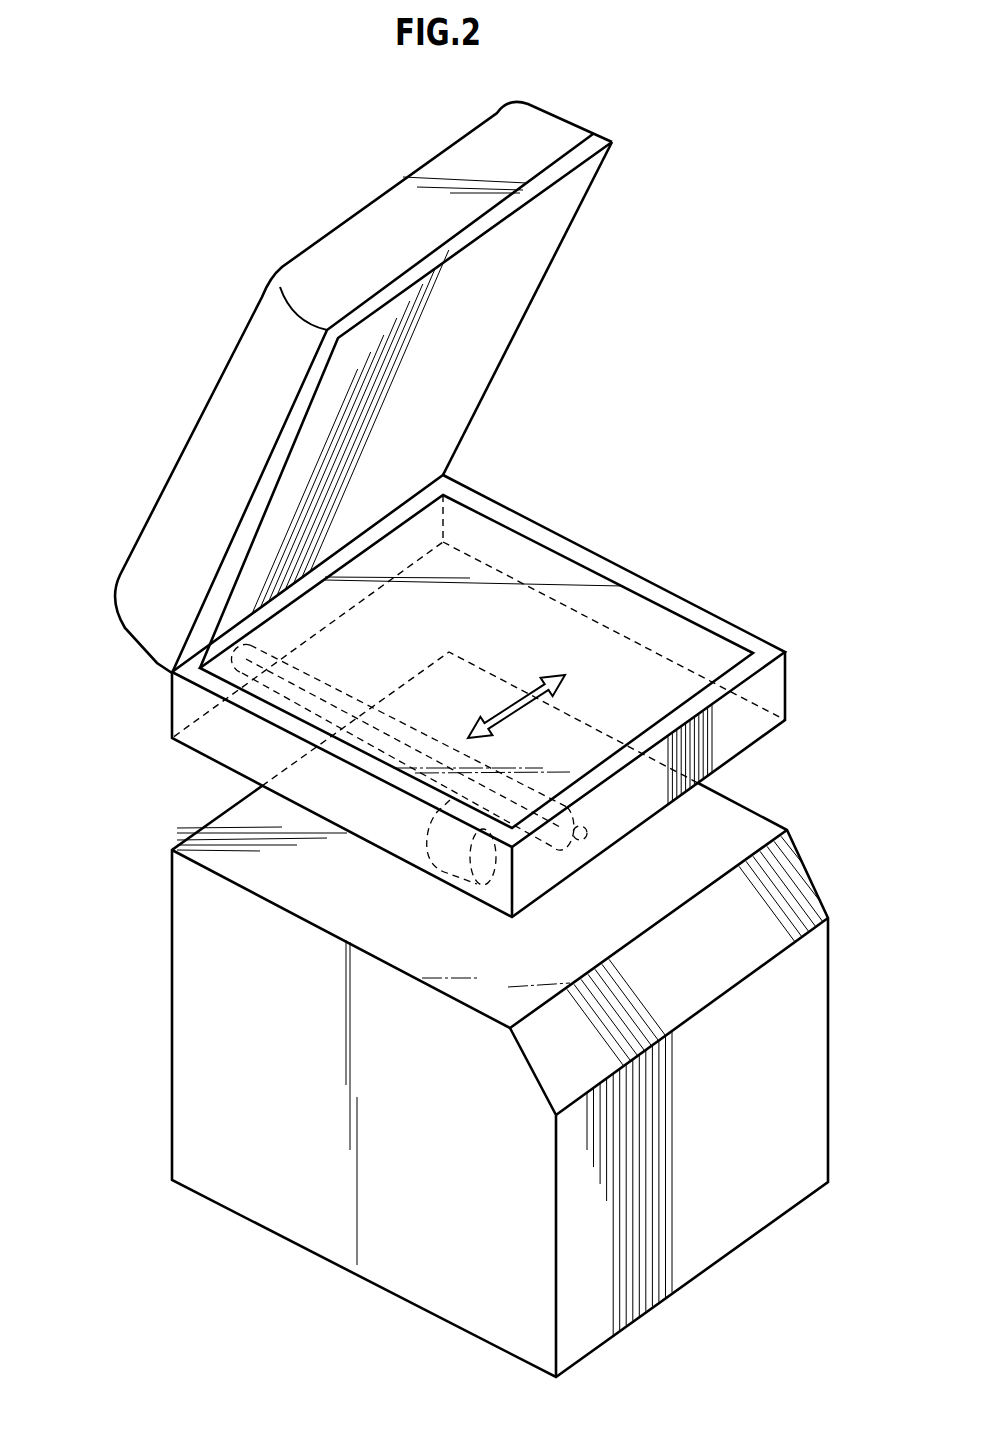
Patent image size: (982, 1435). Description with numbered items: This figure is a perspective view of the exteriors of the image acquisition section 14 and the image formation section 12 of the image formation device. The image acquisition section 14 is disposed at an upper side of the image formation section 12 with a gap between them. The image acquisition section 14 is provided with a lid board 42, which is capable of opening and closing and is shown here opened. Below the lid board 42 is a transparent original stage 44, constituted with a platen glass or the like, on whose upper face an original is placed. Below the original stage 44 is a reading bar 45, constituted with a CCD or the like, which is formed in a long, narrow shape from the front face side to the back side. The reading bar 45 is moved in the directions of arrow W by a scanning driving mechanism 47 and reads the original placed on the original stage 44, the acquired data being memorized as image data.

The image formation section 12 is at (160, 977).
The image acquisition section 14 is at (131, 661).
The lid board 42 is at (538, 267).
The original stage 44 is at (657, 625).
The reading bar 45 is at (600, 838).
The scanning driving mechanism 47 is at (490, 863).
The arrow W is at (522, 710).